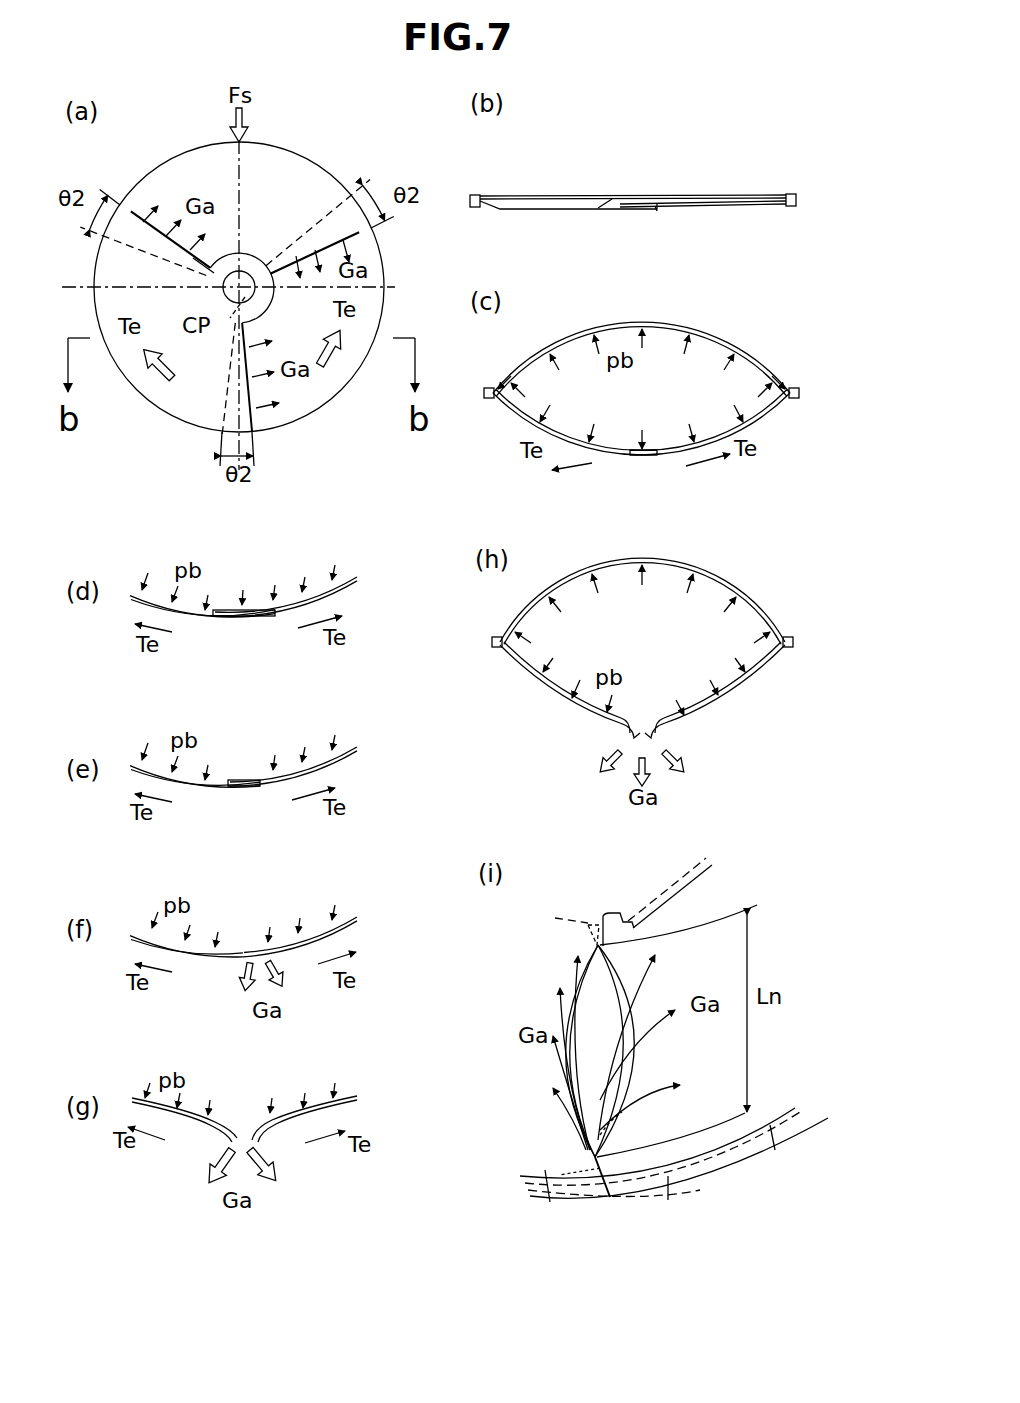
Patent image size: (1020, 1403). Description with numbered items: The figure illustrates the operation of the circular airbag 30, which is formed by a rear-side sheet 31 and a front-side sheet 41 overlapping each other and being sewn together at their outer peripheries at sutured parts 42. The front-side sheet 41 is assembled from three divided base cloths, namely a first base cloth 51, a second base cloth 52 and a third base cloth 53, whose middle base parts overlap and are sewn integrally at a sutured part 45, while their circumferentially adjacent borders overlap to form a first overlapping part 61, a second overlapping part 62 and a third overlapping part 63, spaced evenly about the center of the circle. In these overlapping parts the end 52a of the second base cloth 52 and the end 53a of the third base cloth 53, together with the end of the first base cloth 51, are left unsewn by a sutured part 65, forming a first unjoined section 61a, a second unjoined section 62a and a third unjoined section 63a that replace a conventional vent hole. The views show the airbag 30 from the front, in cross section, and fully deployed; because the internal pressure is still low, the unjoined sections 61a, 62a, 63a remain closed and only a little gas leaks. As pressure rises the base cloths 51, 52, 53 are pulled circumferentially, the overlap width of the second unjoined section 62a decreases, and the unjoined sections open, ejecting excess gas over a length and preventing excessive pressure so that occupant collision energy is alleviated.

The airbag 30 is at (297, 130).
The rear-side sheet 31 is at (562, 193).
The front-side sheet 41 is at (302, 158).
The sutured parts 42 is at (672, 1205).
The sutured part 45 is at (712, 870).
The first base cloth 51 is at (332, 195).
The second base cloth 52 is at (325, 375).
The end of the second base cloth 52a is at (218, 608).
The third base cloth 53 is at (150, 390).
The end of the third base cloth 53a is at (258, 618).
The first overlapping part 61 is at (337, 200).
The first unjoined section 61a is at (360, 238).
The second overlapping part 62 is at (225, 415).
The second unjoined section 62a is at (255, 430).
The third overlapping part 63 is at (120, 250).
The third unjoined section 63a is at (160, 210).
The sutured part 65 is at (593, 925).